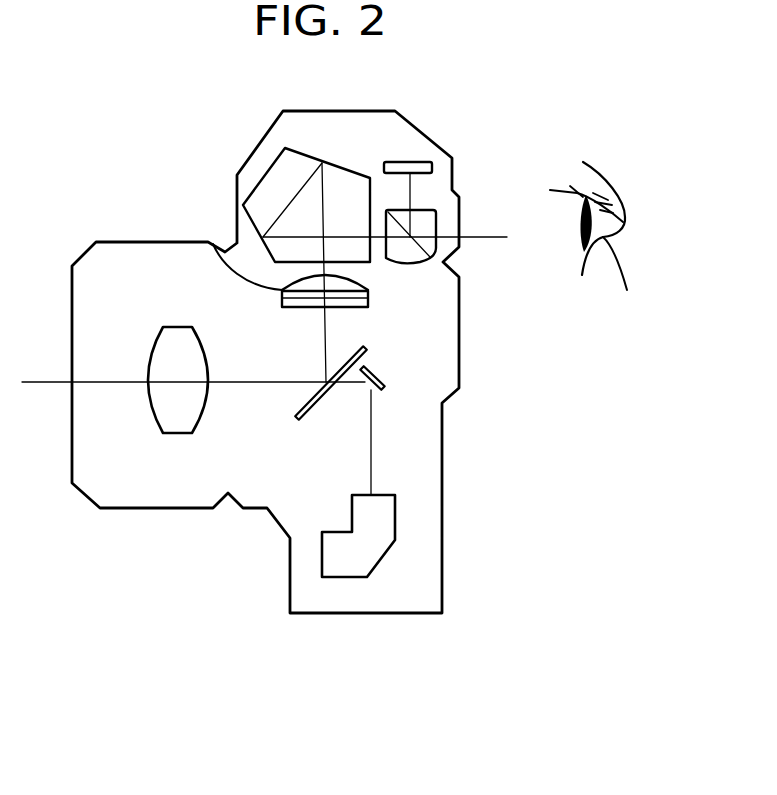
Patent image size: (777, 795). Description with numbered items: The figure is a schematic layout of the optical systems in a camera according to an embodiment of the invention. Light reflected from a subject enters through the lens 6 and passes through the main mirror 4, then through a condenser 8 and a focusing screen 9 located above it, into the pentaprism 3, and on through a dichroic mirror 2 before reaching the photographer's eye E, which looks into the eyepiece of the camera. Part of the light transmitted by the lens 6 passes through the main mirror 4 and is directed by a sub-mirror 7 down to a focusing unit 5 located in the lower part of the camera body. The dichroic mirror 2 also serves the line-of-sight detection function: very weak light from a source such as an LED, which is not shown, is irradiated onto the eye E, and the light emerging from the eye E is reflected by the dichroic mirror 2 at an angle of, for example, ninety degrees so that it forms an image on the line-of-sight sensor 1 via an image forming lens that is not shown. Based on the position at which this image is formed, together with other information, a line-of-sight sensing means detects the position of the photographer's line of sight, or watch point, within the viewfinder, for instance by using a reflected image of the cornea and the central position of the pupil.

The line-of-sight sensor 1 is at (420, 166).
The dichroic mirror 2 is at (433, 220).
The pentaprism 3 is at (275, 175).
The main mirror 4 is at (365, 348).
The focusing unit 5 is at (390, 518).
The lens 6 is at (175, 427).
The sub-mirror 7 is at (384, 377).
The condenser 8 is at (213, 244).
The focusing screen 9 is at (368, 297).
The eye E is at (594, 257).